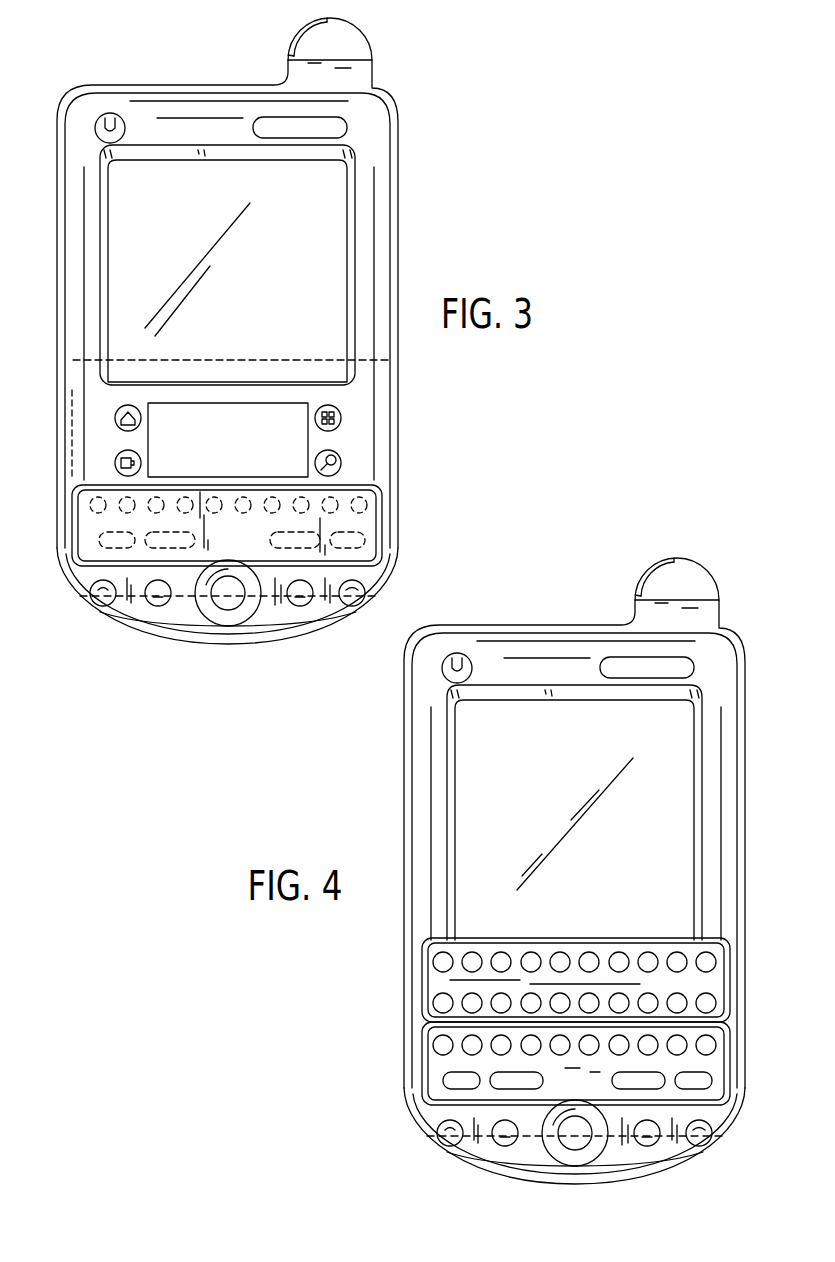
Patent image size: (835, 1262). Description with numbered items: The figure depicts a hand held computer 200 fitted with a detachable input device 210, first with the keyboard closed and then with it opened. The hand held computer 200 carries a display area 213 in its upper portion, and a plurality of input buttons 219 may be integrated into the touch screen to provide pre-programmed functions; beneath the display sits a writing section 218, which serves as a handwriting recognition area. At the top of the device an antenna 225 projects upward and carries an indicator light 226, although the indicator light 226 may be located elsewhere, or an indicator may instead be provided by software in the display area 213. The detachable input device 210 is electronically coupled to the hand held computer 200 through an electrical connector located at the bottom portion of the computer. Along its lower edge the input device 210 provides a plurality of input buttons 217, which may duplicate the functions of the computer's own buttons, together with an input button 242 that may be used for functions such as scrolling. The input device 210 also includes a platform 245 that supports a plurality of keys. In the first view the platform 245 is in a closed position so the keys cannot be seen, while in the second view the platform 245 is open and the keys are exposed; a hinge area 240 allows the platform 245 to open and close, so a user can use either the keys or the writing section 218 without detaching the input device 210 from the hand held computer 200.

In FIG. 3, the hand held computer 200 is at (424, 182).
In FIG. 4, the hand held computer 200 is at (750, 634).
In FIG. 3, the detachable input device 210 is at (62, 632).
In FIG. 4, the detachable input device 210 is at (378, 1155).
In FIG. 3, the display area 213 is at (251, 300).
In FIG. 4, the display area 213 is at (545, 760).
In FIG. 3, the input buttons 217 is at (158, 606).
In FIG. 4, the input buttons 217 is at (504, 1146).
In FIG. 3, the writing section 218 is at (209, 452).
In FIG. 3, the input buttons 219 is at (114, 419).
In FIG. 3, the antenna 225 is at (358, 38).
In FIG. 4, the antenna 225 is at (706, 584).
In FIG. 3, the indicator light 226 is at (295, 32).
In FIG. 4, the indicator light 226 is at (655, 575).
In FIG. 3, the hinge area 240 is at (382, 487).
In FIG. 4, the hinge area 240 is at (435, 1018).
In FIG. 3, the input button 242 is at (228, 600).
In FIG. 4, the input button 242 is at (575, 1140).
In FIG. 3, the platform 245 is at (375, 530).
In FIG. 4, the platform 245 is at (435, 1070).